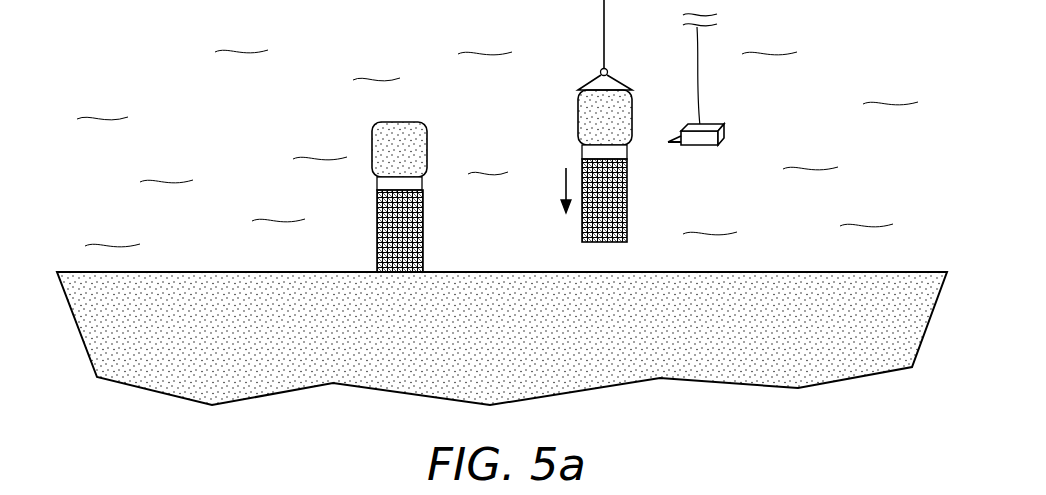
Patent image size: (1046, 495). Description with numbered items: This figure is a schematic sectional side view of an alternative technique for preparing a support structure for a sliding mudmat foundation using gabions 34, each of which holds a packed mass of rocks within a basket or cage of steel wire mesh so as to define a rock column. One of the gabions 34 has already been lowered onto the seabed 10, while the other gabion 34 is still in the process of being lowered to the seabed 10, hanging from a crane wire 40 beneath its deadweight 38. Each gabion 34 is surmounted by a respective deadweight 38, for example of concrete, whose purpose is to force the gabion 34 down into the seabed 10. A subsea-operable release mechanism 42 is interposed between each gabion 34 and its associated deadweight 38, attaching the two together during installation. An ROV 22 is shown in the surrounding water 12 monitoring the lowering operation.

The seabed 10 is at (786, 280).
The body of water 12 is at (232, 130).
The ROV 22 is at (720, 139).
The gabion 34 is at (424, 232).
The deadweight 38 is at (428, 151).
The crane wire 40 is at (604, 25).
The release mechanism 42 is at (377, 183).